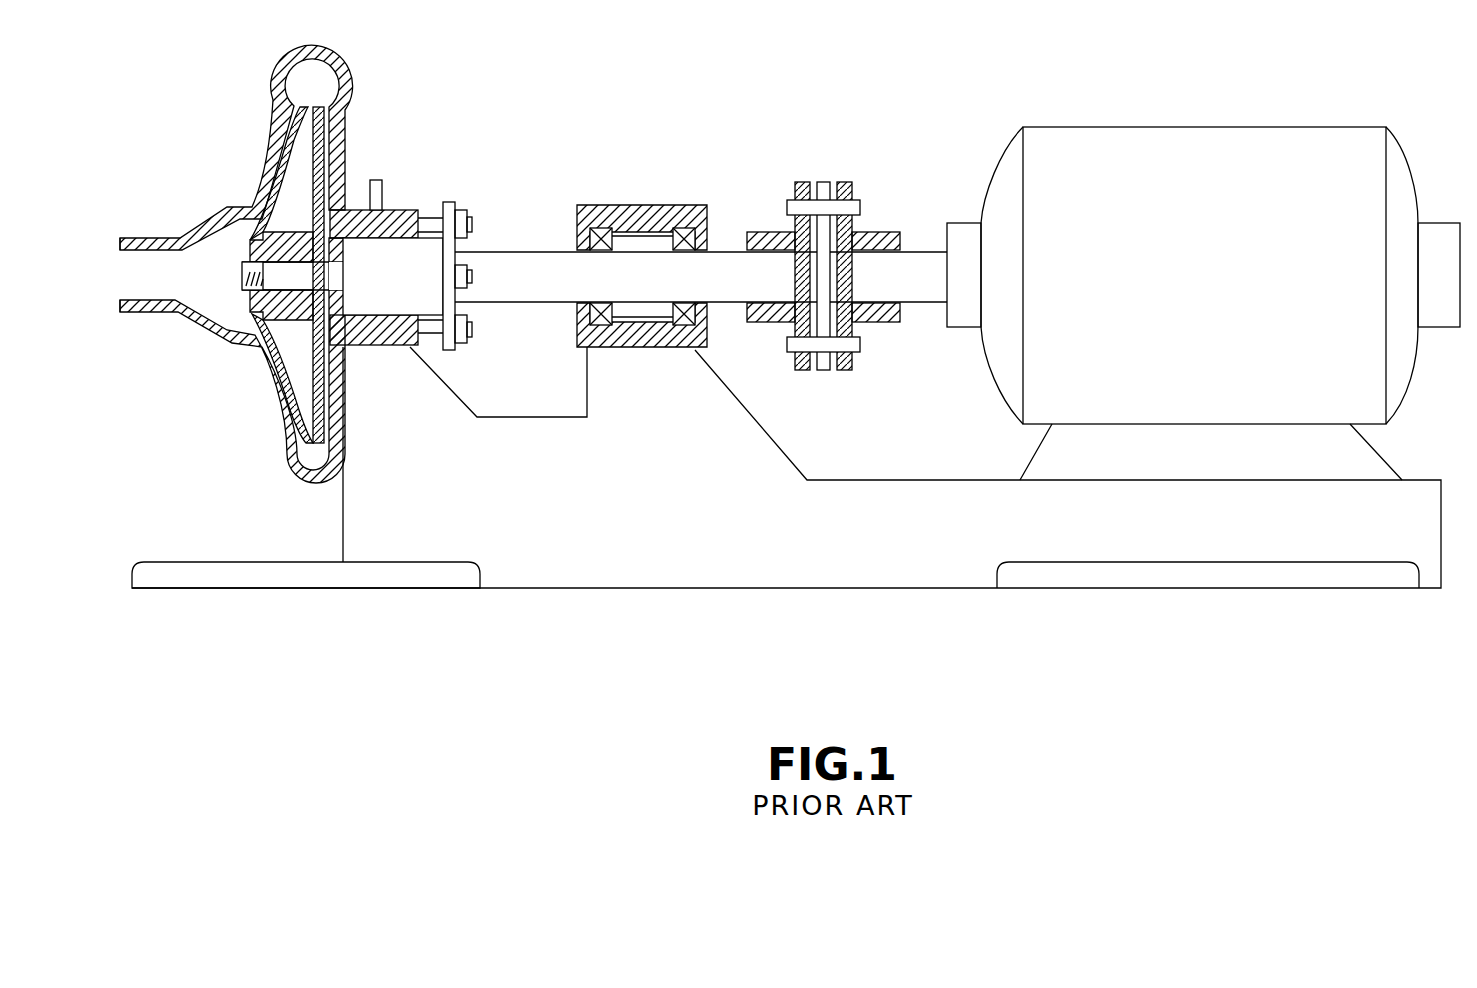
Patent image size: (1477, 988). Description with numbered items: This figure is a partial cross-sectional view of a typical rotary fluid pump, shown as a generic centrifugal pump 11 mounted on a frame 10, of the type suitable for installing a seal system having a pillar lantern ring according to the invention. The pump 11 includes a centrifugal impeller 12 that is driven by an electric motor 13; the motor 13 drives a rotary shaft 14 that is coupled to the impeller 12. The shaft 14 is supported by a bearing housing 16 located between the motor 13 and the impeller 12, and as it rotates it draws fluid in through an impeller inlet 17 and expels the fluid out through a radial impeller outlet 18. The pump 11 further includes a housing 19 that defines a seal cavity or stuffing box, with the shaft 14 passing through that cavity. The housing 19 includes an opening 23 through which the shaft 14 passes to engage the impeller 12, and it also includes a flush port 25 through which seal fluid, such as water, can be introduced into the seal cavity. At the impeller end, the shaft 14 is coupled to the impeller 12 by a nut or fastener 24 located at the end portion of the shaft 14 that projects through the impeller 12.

The frame 10 is at (867, 547).
The centrifugal pump 11 is at (428, 144).
The centrifugal impeller 12 is at (300, 350).
The electric motor 13 is at (1177, 140).
The rotary shaft 14 is at (538, 273).
The bearing housing 16 is at (654, 343).
The impeller inlet 17 is at (128, 283).
The radial impeller outlet 18 is at (305, 77).
The housing 19 is at (418, 268).
The opening 23 is at (342, 263).
The nut or fastener 24 is at (248, 237).
The flush port 25 is at (386, 184).